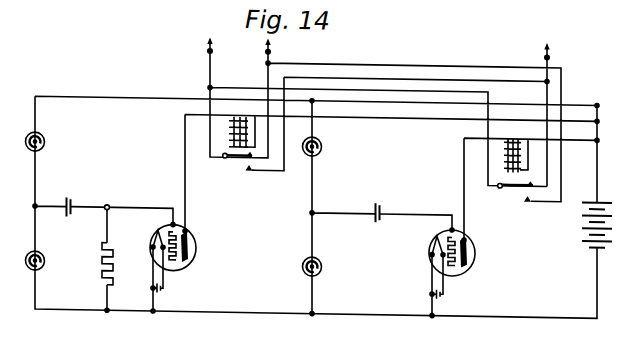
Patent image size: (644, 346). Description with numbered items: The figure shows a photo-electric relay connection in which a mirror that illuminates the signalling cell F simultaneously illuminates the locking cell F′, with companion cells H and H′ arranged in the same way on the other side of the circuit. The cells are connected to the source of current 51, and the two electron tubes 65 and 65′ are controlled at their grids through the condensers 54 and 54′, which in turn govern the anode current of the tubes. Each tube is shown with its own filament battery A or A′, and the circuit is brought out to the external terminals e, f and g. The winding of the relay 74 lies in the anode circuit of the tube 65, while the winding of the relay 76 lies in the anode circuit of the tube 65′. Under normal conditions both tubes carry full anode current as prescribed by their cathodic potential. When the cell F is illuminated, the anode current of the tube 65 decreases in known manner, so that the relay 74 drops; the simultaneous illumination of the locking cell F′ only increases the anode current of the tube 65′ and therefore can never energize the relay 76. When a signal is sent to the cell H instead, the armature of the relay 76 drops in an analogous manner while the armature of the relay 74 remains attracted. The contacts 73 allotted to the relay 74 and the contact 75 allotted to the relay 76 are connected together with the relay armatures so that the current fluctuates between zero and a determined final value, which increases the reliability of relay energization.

The source of current 51 is at (589, 225).
The condenser 54 is at (389, 209).
The condenser 54' is at (80, 204).
The tube 65 is at (462, 253).
The tube 65' is at (185, 247).
The contacts 73 is at (515, 195).
The relay 74 is at (512, 150).
The contact 75 is at (238, 163).
The relay 76 is at (238, 125).
The filament battery A is at (441, 285).
The filament battery A' is at (162, 279).
The signalling cell F is at (319, 267).
The locking cell F' is at (44, 143).
The cell H is at (44, 261).
The signal lamp H' is at (322, 147).
The terminal e is at (215, 46).
The terminal f is at (273, 47).
The terminal g is at (552, 52).